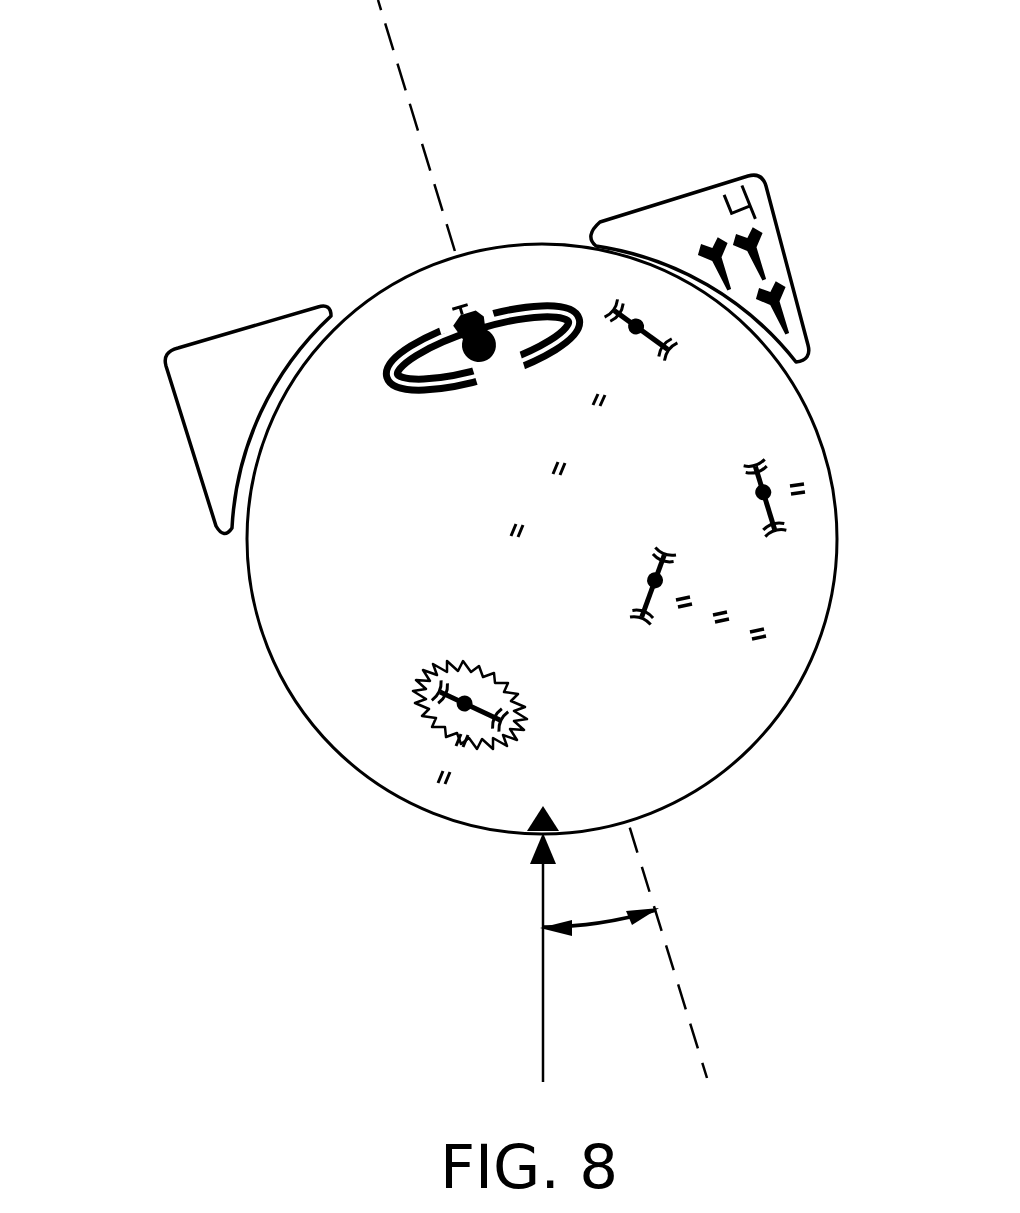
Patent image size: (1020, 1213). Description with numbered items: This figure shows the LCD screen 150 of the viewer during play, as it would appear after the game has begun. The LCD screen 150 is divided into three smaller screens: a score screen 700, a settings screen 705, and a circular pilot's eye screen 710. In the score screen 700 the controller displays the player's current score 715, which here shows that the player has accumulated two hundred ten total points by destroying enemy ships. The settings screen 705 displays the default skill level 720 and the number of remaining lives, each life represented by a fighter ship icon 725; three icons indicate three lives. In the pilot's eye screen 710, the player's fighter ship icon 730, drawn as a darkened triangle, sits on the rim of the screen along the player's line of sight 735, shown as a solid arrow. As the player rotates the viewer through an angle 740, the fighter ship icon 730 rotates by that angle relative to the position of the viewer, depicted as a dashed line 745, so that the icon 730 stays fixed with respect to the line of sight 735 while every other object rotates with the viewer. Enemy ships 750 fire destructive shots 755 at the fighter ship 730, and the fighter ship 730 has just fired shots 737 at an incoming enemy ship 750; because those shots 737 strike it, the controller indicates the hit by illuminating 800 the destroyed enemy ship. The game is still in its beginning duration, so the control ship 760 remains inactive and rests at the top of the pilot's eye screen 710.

The liquid crystal display screen 150 is at (178, 633).
The score screen 700 is at (206, 393).
The settings screen 705 is at (724, 242).
The pilot's eye screen 710 is at (304, 668).
The current score 715 is at (238, 340).
The default skill level 720 is at (726, 203).
The icon 725 is at (778, 270).
The fighter ship icon 730 is at (560, 818).
The player's line of sight 735 is at (541, 1013).
The fired shots 737 is at (434, 773).
The angle 740 is at (615, 966).
The position of the viewer 745 is at (694, 998).
The enemy ship 750 is at (644, 580).
The destructive shots 755 is at (506, 531).
The control ship 760 is at (396, 392).
The illuminating 800 is at (456, 668).